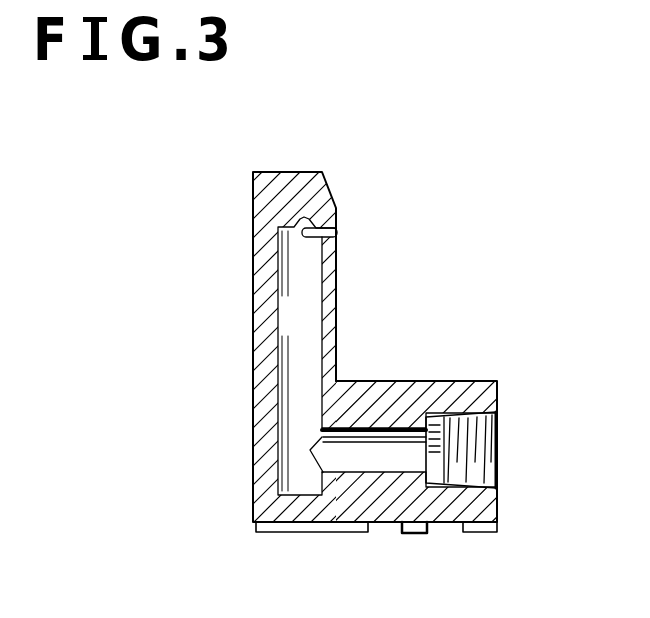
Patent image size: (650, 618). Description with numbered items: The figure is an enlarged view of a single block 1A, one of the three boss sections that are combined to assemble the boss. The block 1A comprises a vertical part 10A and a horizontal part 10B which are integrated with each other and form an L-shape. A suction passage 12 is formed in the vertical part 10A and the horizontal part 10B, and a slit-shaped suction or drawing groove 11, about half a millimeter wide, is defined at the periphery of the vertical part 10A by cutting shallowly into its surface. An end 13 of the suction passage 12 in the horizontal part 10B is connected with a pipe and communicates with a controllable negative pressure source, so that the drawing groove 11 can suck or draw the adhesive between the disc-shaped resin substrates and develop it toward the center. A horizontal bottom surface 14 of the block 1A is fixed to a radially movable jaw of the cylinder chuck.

The block 1A is at (324, 157).
The vertical part 10A is at (265, 288).
The horizontal part 10B is at (408, 388).
The drawing groove 11 is at (337, 233).
The suction passage 12 is at (308, 332).
The end of the suction passage 13 is at (470, 481).
The horizontal bottom surface 14 is at (443, 523).